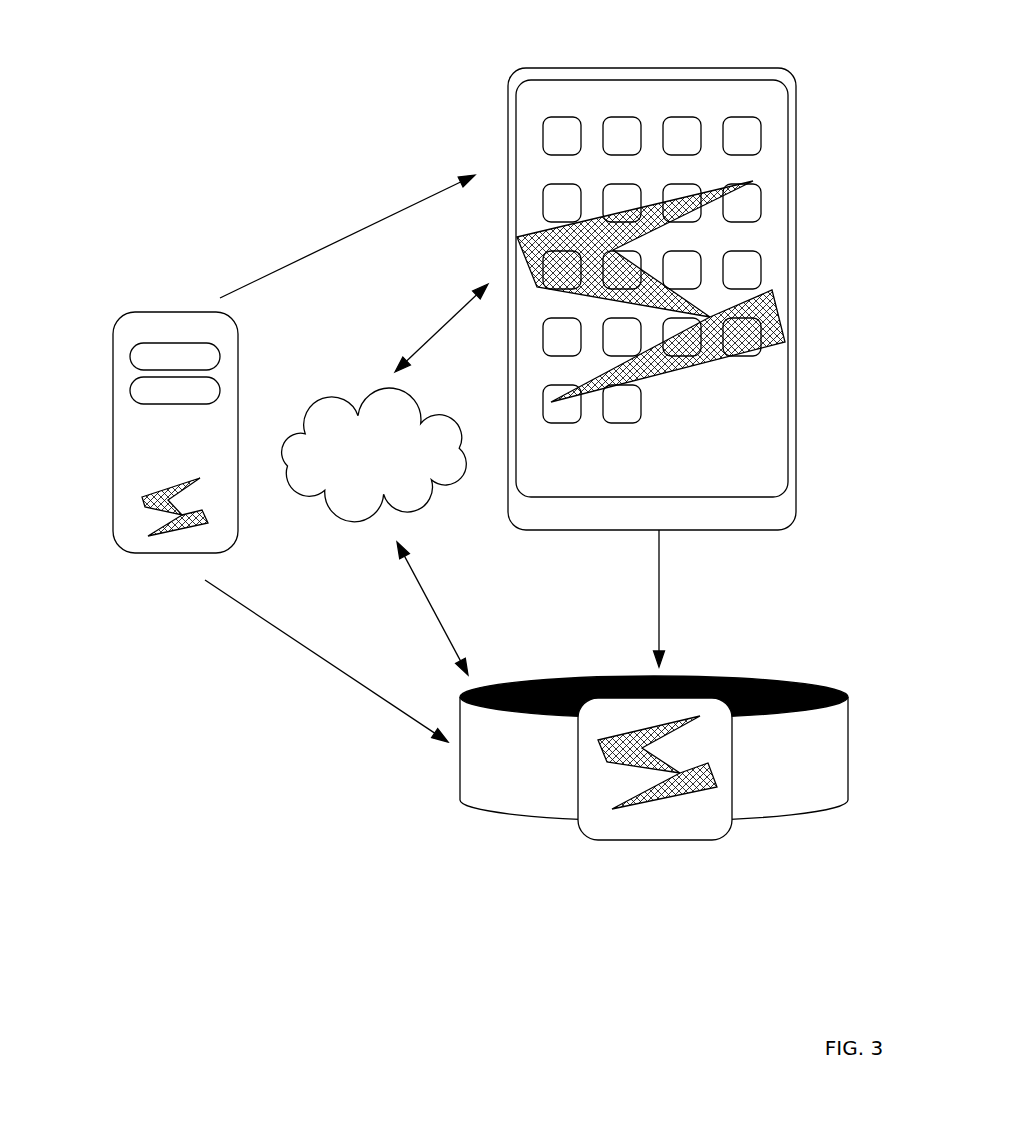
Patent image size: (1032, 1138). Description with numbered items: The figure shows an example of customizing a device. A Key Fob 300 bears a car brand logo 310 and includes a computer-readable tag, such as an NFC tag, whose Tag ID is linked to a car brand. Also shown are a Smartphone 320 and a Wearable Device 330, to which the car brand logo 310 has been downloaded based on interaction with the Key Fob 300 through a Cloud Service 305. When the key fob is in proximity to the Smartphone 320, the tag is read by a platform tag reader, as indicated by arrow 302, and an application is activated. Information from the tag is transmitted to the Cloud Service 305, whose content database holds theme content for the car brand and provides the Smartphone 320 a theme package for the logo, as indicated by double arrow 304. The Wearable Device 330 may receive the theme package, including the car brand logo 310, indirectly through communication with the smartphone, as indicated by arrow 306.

The key fob 300 is at (177, 311).
The arrow 302 is at (340, 458).
The double arrow 304 is at (441, 479).
The cloud service 305 is at (374, 455).
The arrow 306 is at (641, 598).
The car brand logo 310 is at (170, 532).
The smartphone 320 is at (800, 126).
The wearable device 330 is at (822, 726).